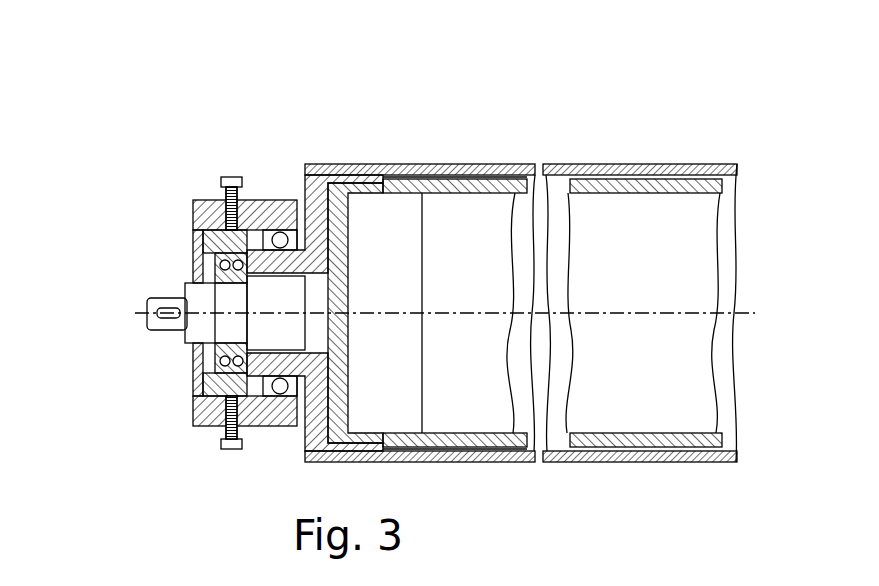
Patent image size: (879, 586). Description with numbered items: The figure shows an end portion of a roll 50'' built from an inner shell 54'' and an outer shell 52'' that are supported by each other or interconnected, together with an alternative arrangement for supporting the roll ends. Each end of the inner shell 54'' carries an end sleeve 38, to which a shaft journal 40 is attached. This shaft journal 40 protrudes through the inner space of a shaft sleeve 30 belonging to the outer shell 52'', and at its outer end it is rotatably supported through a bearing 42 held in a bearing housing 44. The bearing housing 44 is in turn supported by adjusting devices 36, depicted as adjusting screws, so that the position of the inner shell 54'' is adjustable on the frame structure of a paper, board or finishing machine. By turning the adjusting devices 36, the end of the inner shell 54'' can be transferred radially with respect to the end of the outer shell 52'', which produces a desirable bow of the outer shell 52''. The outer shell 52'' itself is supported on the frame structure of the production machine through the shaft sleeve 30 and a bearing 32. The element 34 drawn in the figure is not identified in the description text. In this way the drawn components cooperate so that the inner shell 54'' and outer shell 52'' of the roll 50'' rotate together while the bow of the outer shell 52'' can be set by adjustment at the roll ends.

The shaft sleeve 30 is at (323, 163).
The bearing 32 is at (293, 198).
The flange ring 34 is at (213, 199).
The adjusting devices 36 is at (224, 177).
The end sleeve 38 is at (375, 163).
The shaft journal 40 is at (181, 327).
The bearing 42 is at (203, 268).
The bearing housing 44 is at (207, 387).
The roll 50'' is at (521, 245).
The outer shell 52'' is at (552, 238).
The inner shell 54'' is at (441, 234).